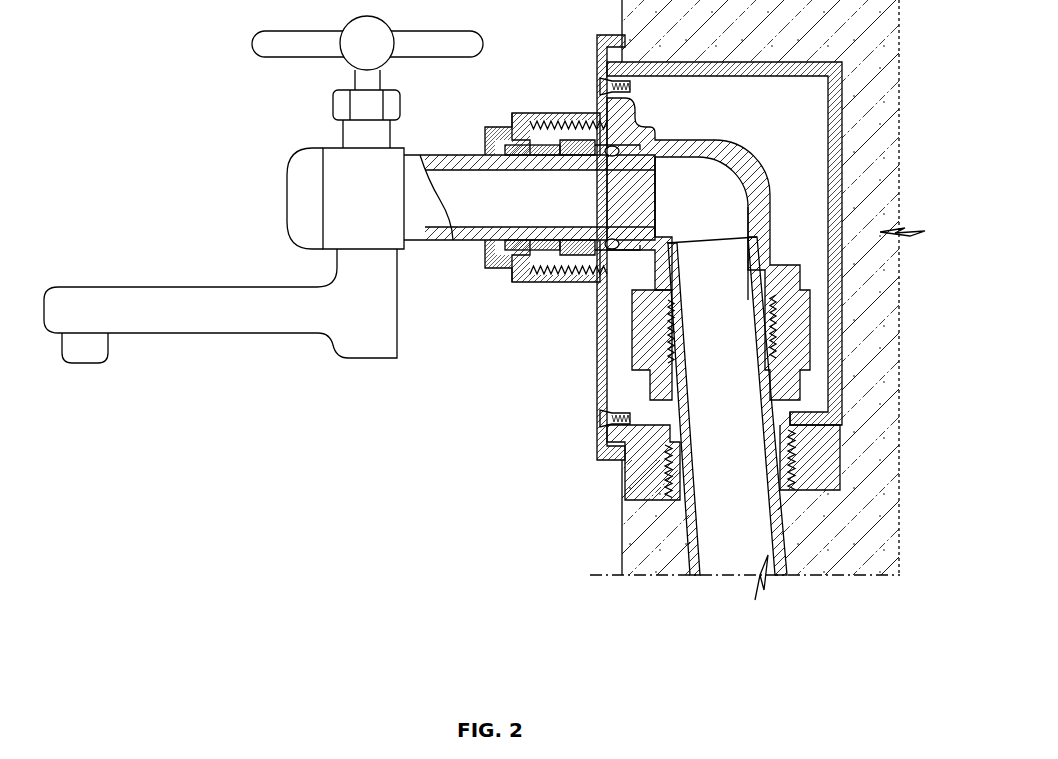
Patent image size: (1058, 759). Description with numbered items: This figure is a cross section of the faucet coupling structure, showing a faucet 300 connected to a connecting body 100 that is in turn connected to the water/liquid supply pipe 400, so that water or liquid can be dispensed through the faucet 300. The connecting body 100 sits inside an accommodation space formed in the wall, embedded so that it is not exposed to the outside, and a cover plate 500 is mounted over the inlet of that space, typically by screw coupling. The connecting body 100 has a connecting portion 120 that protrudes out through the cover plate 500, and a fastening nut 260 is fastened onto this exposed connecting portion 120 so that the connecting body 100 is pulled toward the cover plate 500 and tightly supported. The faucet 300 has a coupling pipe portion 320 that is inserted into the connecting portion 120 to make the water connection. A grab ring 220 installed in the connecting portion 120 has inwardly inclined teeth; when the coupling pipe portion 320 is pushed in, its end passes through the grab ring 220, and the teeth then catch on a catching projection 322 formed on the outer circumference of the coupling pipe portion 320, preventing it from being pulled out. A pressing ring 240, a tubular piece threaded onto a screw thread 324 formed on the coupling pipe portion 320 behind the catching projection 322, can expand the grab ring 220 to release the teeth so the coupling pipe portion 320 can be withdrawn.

The connecting body 100 is at (740, 152).
The connecting portion 120 is at (535, 112).
The grab ring 220 is at (573, 170).
The pressing ring 240 is at (527, 165).
The fastening nut 260 is at (565, 112).
The faucet 300 is at (295, 165).
The coupling pipe portion 320 is at (440, 240).
The catching projection 322 is at (597, 172).
The screw thread 324 is at (490, 130).
The water/liquid supply pipe 400 is at (597, 455).
The cover plate 500 is at (597, 330).